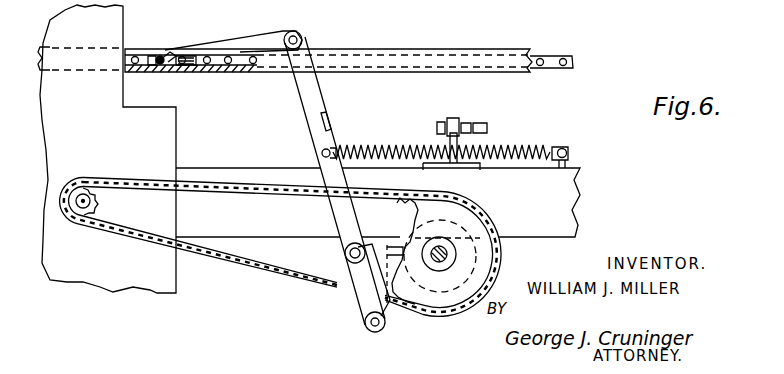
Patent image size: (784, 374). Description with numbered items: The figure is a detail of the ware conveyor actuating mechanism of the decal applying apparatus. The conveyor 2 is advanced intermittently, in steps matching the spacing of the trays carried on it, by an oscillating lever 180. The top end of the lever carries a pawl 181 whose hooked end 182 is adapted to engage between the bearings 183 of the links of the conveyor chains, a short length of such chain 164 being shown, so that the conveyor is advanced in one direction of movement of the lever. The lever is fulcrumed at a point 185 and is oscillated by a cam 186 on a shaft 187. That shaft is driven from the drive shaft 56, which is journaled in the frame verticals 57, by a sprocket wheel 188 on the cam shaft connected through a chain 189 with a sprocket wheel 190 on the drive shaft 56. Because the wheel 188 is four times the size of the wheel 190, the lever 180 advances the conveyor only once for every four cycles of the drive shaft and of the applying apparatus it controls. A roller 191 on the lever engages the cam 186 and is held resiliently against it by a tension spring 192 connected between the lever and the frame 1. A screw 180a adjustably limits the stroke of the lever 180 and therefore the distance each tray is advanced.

The frame body 1 is at (590, 192).
The conveyor 2 is at (585, 65).
The shaft 56 is at (84, 210).
The frame verticals 57 is at (115, 283).
The chain section 164 is at (557, 56).
The oscillating lever 180 is at (316, 102).
The screw 180a is at (443, 126).
The pawl 181 is at (272, 28).
The hooked end 182 is at (164, 55).
The bearings 183 is at (197, 44).
The fulcrum 185 is at (366, 327).
The cam 186 is at (380, 273).
The shaft 187 is at (442, 260).
The sprocket wheel 188 is at (503, 264).
The chain 189 is at (270, 272).
The sprocket wheel 190 is at (99, 206).
The roller 191 is at (345, 257).
The tension spring 192 is at (411, 147).